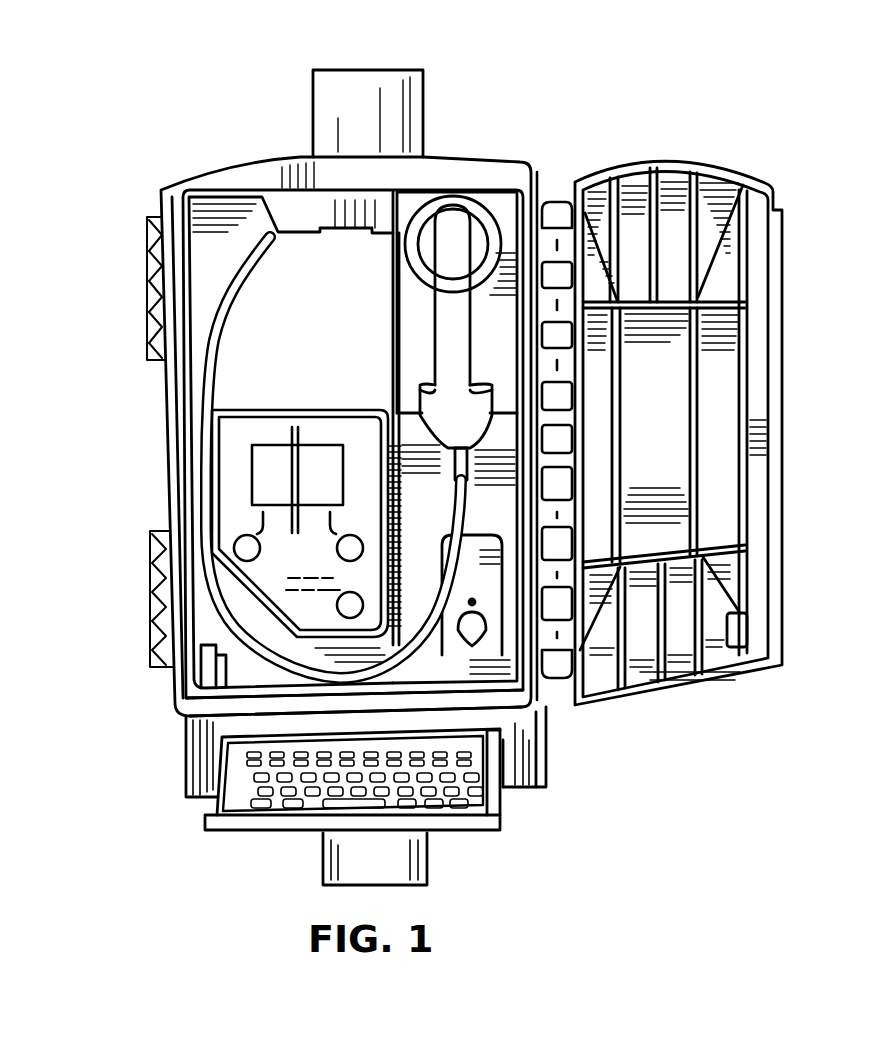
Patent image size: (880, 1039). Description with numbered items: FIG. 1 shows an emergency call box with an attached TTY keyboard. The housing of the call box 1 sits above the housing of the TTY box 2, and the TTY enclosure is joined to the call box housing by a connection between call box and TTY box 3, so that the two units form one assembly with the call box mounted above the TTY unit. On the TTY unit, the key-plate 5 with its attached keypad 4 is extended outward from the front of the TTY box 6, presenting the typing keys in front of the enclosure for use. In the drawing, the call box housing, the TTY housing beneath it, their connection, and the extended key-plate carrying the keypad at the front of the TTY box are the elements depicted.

The housing of call box 1 is at (150, 411).
The housing of TTY box 2 is at (160, 757).
The connection between call box and TTY box 3 is at (173, 727).
The keypad 4 is at (470, 798).
The key-plate 5 is at (487, 833).
The front of TTY box 6 is at (515, 757).